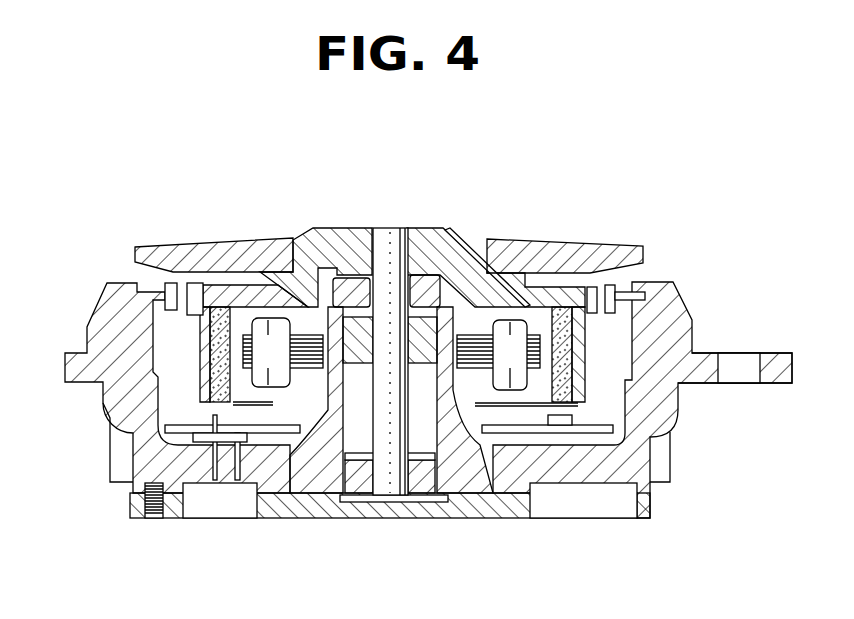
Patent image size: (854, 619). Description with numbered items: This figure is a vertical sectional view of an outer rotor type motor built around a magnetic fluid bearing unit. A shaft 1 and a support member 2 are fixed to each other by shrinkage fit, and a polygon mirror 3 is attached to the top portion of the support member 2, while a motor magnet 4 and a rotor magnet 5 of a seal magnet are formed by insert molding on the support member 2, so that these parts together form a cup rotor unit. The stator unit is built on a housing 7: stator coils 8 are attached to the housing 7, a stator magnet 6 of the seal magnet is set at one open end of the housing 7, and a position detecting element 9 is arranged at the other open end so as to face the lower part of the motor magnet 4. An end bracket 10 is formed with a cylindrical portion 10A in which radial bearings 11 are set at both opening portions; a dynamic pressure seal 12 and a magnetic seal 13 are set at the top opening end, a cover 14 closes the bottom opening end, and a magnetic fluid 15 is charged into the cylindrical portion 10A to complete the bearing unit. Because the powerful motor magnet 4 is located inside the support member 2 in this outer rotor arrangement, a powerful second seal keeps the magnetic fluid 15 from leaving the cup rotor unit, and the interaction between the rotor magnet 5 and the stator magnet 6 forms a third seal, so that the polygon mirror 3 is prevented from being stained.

The shaft 1 is at (388, 230).
The support member 2 is at (476, 244).
The polygon mirror 3 is at (553, 265).
The motor magnet 4 is at (573, 377).
The rotor magnet 5 is at (592, 285).
The stator magnet 6 is at (616, 285).
The housing 7 is at (694, 320).
The stator coils 8 is at (243, 352).
The position detecting element 9 is at (567, 428).
The end bracket 10 is at (135, 487).
The cylindrical portion 10A is at (457, 388).
The radial bearings 11 is at (345, 282).
The dynamic pressure seal 12 is at (350, 278).
The magnetic seal 13 is at (433, 316).
The cover 14 is at (481, 512).
The magnetic fluid 15 is at (420, 446).